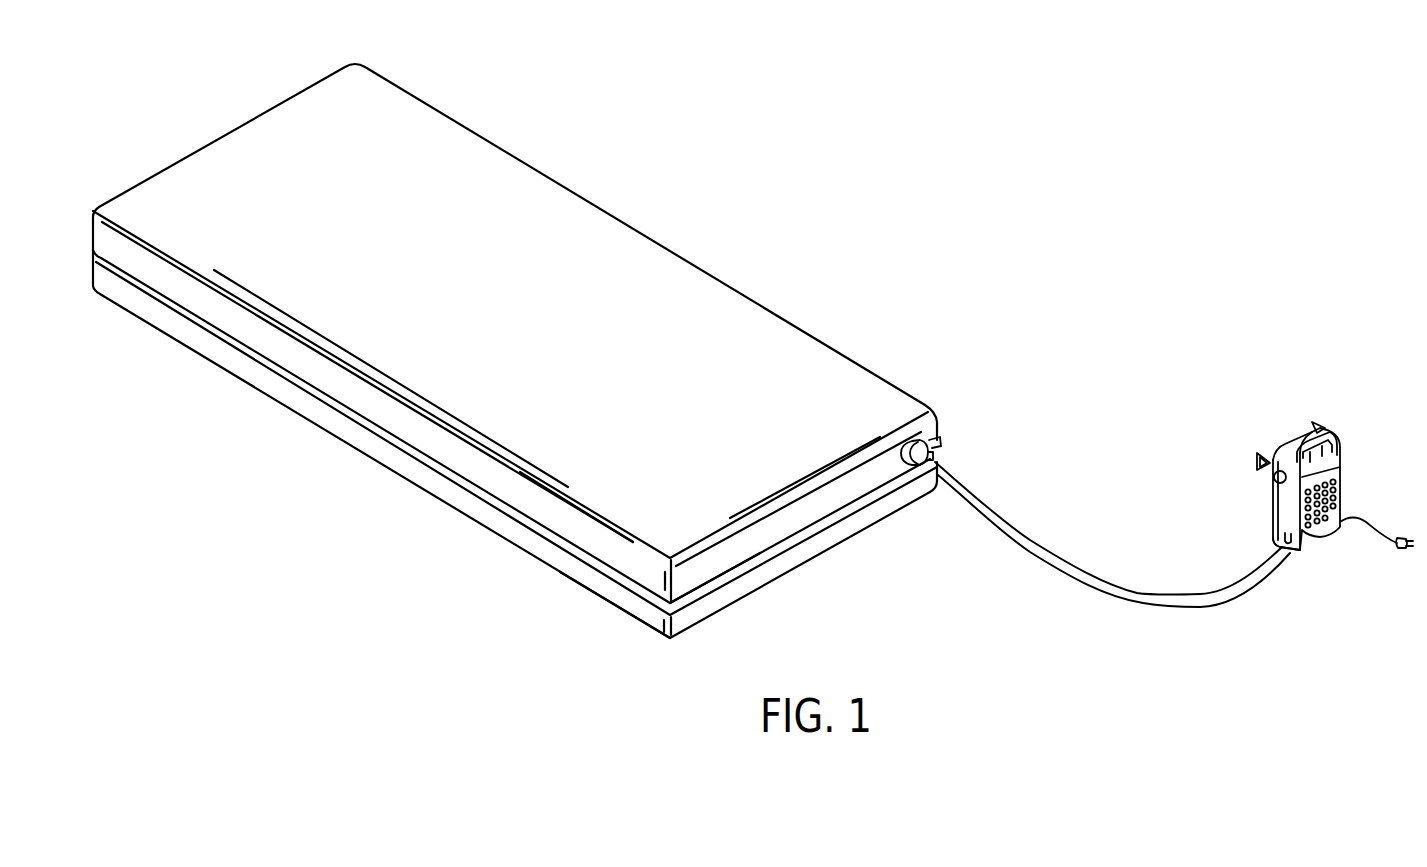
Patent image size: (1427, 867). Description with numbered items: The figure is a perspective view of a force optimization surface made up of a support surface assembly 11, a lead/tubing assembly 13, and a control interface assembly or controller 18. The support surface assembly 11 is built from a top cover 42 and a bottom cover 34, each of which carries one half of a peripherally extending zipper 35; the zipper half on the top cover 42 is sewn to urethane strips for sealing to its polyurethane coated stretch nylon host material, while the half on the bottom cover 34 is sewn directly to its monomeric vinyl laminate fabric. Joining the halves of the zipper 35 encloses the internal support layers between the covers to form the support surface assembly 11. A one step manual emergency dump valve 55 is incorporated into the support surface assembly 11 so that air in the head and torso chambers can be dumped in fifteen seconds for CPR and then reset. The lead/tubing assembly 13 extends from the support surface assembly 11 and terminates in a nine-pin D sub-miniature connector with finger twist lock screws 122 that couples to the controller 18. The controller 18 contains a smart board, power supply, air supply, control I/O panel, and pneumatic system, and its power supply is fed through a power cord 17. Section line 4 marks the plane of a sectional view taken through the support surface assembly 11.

The support surface assembly 11 is at (672, 303).
The lead/tubing assembly 13 is at (1030, 553).
The power cord 17 is at (1377, 543).
The control interface assembly or controller 18 is at (1342, 443).
The bottom cover 34 is at (642, 620).
The peripherally extending zipper 35 is at (690, 593).
The top cover 42 is at (633, 556).
The one step manual emergency dump valve 55 is at (953, 440).
The 9-pin D sub-miniature connector with finger twist lock screws 122 is at (1280, 525).
The section line 4- 4 is at (78, 362).